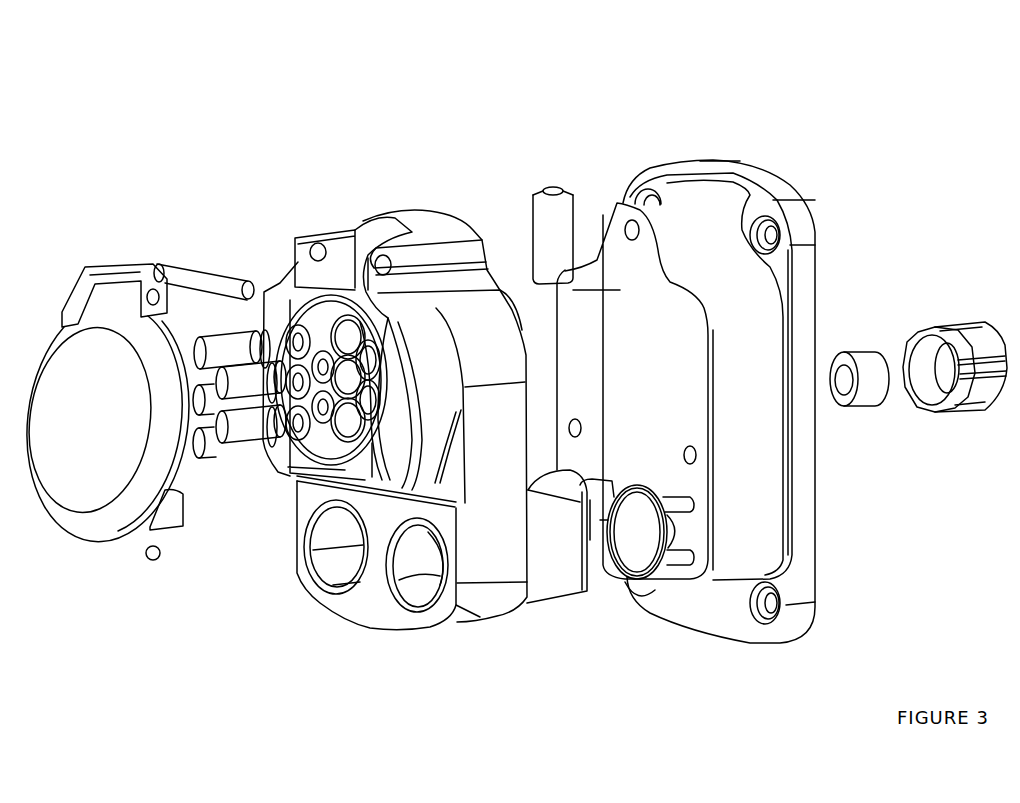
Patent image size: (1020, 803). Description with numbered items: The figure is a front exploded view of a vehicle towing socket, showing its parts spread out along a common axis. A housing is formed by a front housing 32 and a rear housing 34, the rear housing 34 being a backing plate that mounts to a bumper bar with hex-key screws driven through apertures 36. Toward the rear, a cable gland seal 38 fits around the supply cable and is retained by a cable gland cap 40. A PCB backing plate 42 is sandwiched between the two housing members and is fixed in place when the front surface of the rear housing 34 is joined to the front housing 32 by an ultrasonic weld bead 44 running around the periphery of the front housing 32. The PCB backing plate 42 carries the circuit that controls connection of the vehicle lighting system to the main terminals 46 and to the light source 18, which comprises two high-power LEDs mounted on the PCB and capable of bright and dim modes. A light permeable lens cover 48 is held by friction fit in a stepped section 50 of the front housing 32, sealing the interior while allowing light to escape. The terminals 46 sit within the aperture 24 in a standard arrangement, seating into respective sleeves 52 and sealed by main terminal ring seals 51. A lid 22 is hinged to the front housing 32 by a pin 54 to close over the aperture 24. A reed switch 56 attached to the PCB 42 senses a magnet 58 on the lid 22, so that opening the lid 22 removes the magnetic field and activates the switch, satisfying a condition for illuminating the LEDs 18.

The light source 18 is at (637, 600).
The lid 22 is at (82, 536).
The aperture 24 is at (316, 314).
The front housing 32 is at (394, 634).
The rear housing 34 is at (786, 180).
The apertures 36 is at (773, 605).
The cable gland seal 38 is at (872, 346).
The cable gland cap 40 is at (958, 326).
The PCB backing plate 42 is at (616, 203).
The ultrasonic weld bead 44 is at (714, 163).
The terminals 46 is at (229, 462).
The lens cover 48 is at (533, 608).
The stepped section 50 is at (440, 614).
The main terminal ring seals 51 is at (276, 456).
The sleeves 52 is at (350, 325).
The pin 54 is at (205, 262).
The reed switch 56 is at (559, 186).
The magnet 58 is at (154, 562).